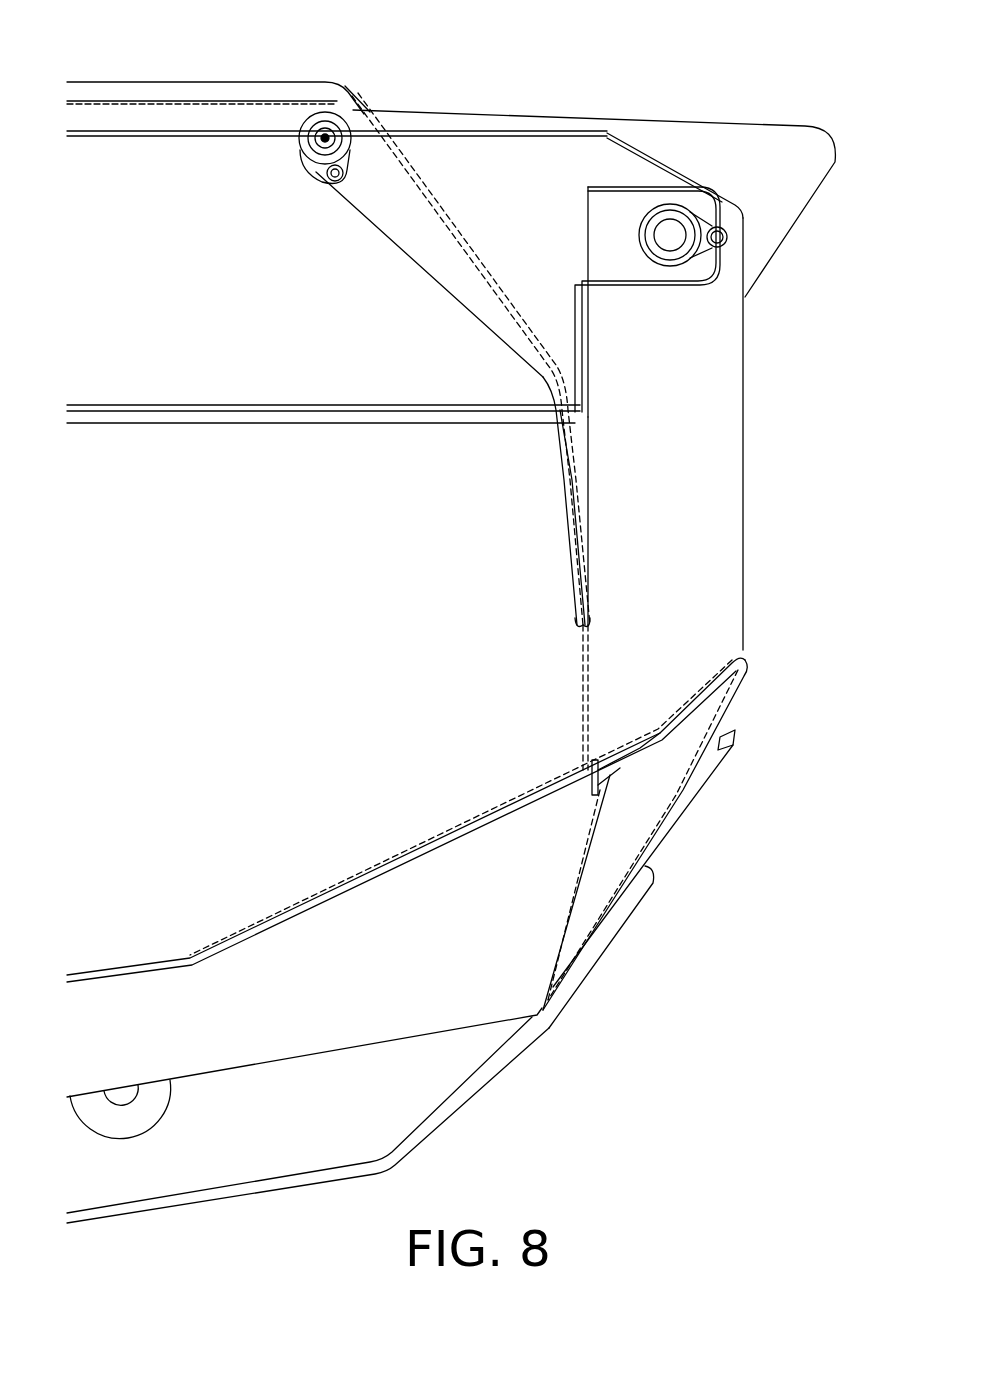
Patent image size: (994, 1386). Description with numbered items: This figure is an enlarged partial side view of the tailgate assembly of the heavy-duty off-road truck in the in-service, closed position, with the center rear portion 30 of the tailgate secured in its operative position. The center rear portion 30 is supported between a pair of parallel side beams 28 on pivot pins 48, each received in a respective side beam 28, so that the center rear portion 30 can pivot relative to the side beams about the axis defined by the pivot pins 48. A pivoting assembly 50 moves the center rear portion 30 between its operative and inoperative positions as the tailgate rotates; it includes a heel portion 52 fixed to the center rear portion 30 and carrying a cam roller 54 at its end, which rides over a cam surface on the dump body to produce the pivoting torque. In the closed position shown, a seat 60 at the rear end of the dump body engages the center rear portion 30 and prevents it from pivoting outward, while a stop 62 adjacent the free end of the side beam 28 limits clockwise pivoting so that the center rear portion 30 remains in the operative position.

The side beam 28 is at (143, 167).
The center rear portion 30 is at (688, 540).
The pivot pin 48 is at (677, 222).
The pivoting assembly 50 is at (568, 105).
The heel portion 52 is at (763, 227).
The cam roller 54 is at (327, 117).
The seat 60 is at (647, 788).
The stop 62 is at (583, 362).